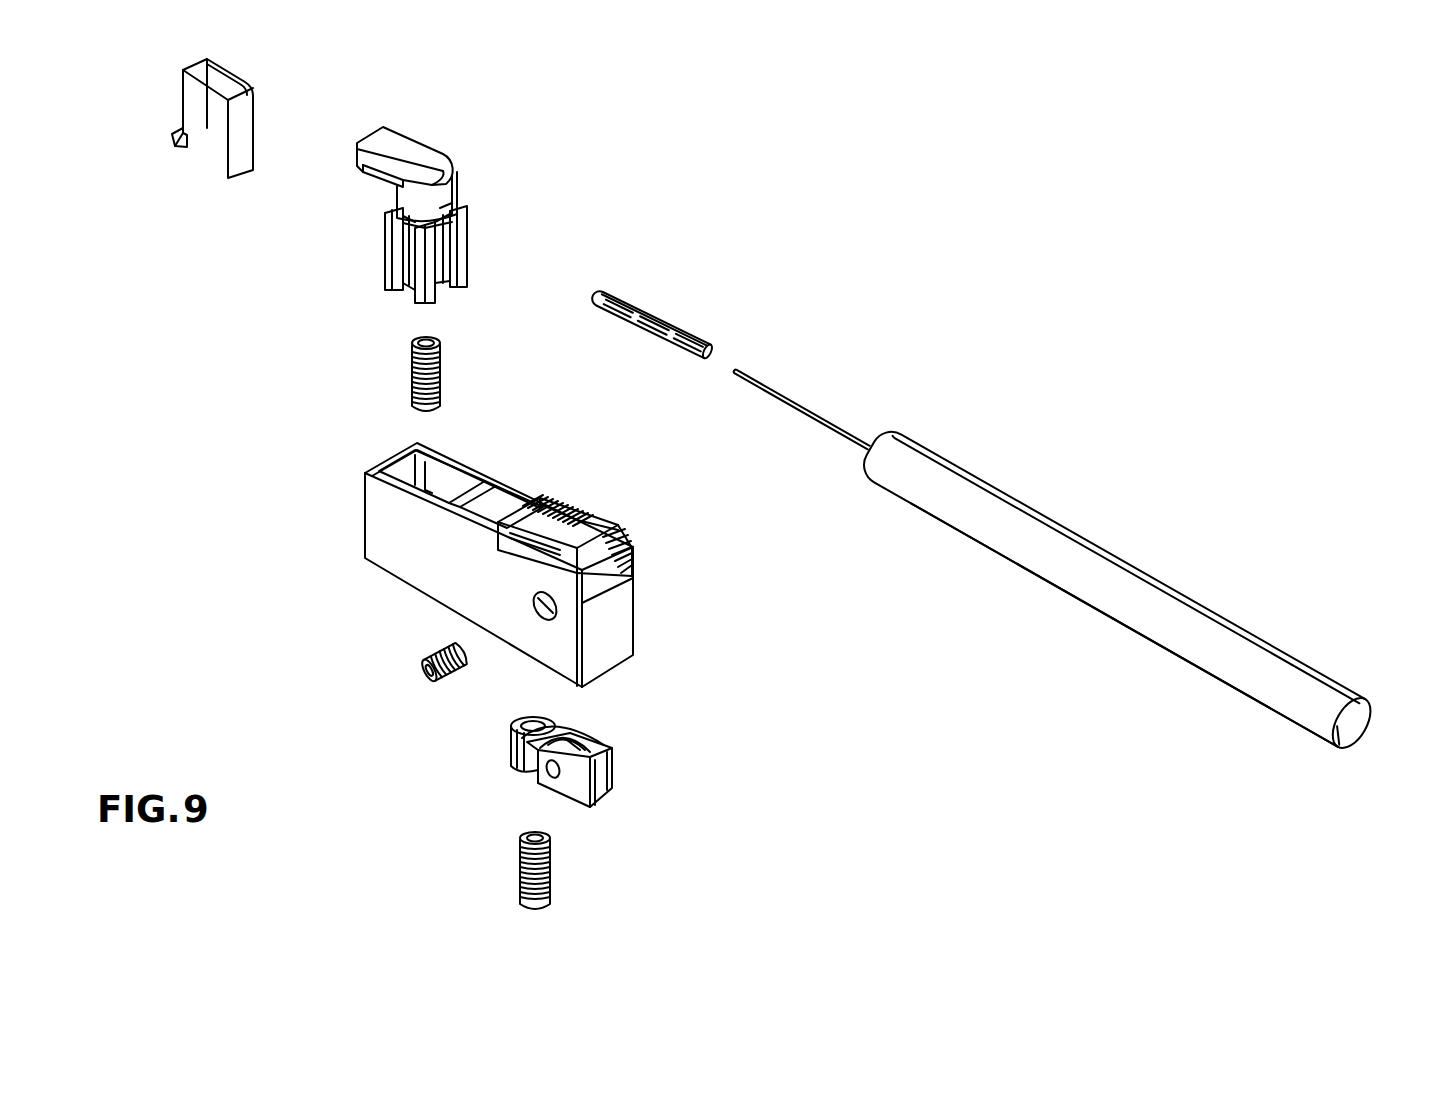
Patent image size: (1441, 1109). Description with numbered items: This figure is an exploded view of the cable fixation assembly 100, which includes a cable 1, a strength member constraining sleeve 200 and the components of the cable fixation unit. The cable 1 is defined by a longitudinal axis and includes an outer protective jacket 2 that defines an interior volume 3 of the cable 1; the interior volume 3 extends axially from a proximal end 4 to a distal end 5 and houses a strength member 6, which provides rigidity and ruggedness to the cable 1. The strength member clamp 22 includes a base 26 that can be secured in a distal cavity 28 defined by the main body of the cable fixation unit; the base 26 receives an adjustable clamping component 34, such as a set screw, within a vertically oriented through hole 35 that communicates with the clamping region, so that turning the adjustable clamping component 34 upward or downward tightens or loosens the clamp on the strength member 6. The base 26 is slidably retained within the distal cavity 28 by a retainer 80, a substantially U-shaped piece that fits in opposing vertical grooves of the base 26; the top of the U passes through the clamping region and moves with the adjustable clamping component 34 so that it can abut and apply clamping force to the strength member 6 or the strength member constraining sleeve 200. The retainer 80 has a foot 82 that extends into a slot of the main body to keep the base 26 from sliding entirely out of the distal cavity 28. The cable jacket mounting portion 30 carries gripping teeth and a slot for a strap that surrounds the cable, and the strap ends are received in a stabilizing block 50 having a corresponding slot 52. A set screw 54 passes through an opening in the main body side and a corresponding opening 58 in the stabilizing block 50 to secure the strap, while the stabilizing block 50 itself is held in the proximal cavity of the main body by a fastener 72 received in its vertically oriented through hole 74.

The cable 1 is at (1180, 590).
The outer protective jacket 2 is at (1212, 670).
The interior volume 3 is at (1360, 754).
The proximal end 4 is at (1372, 705).
The distal end 5 is at (888, 424).
The strength member 6 is at (808, 405).
The strength member clamp 22 is at (427, 160).
The base 26 is at (455, 262).
The distal cavity 28 is at (447, 480).
The cable jacket mounting portion 30 is at (598, 542).
The adjustable clamping component 34 is at (443, 380).
The through hole 35 is at (452, 212).
The stabilizing block 50 is at (602, 775).
The slot 52 is at (587, 752).
The set screw 54 is at (443, 648).
The opening 58 is at (557, 780).
The fastener 72 is at (553, 890).
The through hole 74 is at (532, 722).
The retainer 80 is at (224, 81).
The foot 82 is at (174, 141).
The cable fixation assembly 100 is at (1080, 230).
The strength member constraining sleeve 200 is at (668, 318).